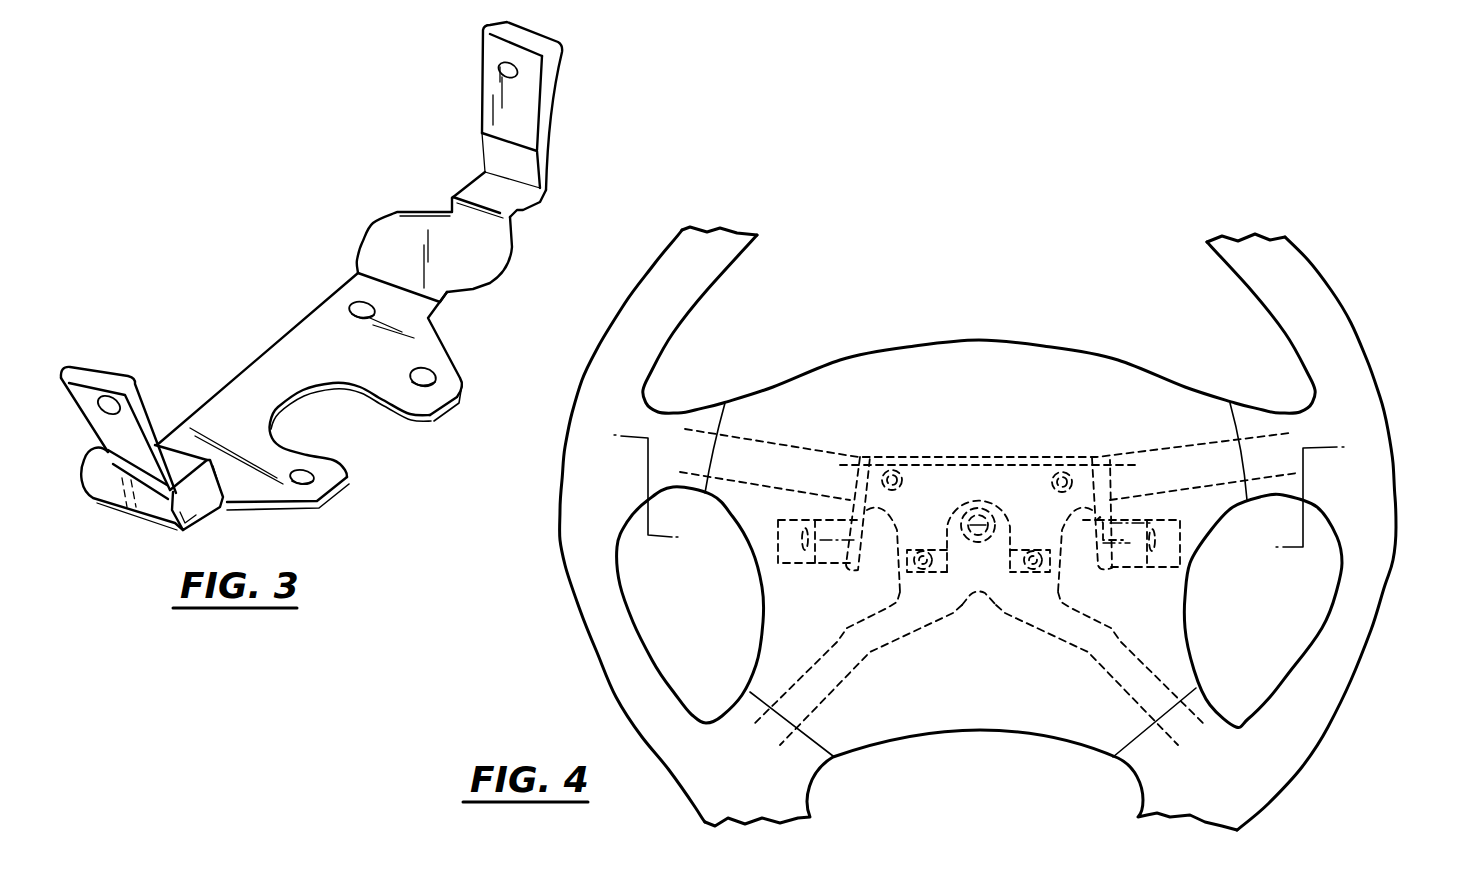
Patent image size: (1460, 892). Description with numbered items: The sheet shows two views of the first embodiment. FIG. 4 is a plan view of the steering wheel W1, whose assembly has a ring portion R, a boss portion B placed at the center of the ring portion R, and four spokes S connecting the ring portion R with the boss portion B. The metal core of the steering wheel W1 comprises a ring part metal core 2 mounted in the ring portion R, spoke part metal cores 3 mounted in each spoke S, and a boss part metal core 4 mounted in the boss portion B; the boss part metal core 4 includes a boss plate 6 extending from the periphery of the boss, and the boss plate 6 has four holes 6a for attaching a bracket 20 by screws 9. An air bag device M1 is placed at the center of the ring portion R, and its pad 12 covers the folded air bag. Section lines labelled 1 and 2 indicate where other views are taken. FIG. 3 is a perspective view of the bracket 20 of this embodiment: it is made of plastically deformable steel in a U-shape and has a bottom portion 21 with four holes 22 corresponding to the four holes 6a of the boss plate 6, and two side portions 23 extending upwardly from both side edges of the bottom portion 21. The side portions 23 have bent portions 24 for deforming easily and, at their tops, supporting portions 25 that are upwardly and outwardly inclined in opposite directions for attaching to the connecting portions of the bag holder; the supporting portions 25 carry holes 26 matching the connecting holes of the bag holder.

In FIG. 4, the section line I-I 1 is at (986, 274).
In FIG. 4, the ring part metal core 2 is at (563, 423).
In FIG. 4, the spoke part metal cores 3 is at (747, 453).
In FIG. 4, the boss part metal core 4 is at (944, 617).
In FIG. 4, the boss plate 6 is at (979, 586).
In FIG. 4, the holes 6a is at (977, 503).
In FIG. 4, the screws 9 is at (882, 468).
In FIG. 4, the pad 12 is at (905, 352).
In FIG. 3, the bracket 20 is at (213, 152).
In FIG. 4, the bracket 20 is at (988, 430).
In FIG. 3, the bottom portion 21 is at (311, 333).
In FIG. 4, the bottom portion 21 is at (998, 458).
In FIG. 3, the holes 22 is at (361, 310).
In FIG. 3, the side portions 23 is at (477, 260).
In FIG. 4, the side portions 23 is at (848, 468).
In FIG. 3, the bent portions 24 is at (520, 192).
In FIG. 3, the supporting portions 25 is at (538, 107).
In FIG. 4, the supporting portions 25 is at (808, 565).
In FIG. 3, the holes 26 is at (502, 66).
In FIG. 4, the ring portion R is at (1277, 257).
In FIG. 4, the steering wheel W1 is at (994, 525).
In FIG. 4, the spokes S is at (718, 698).
In FIG. 4, the air bag device M1 is at (986, 330).
In FIG. 4, the boss portion B is at (978, 752).